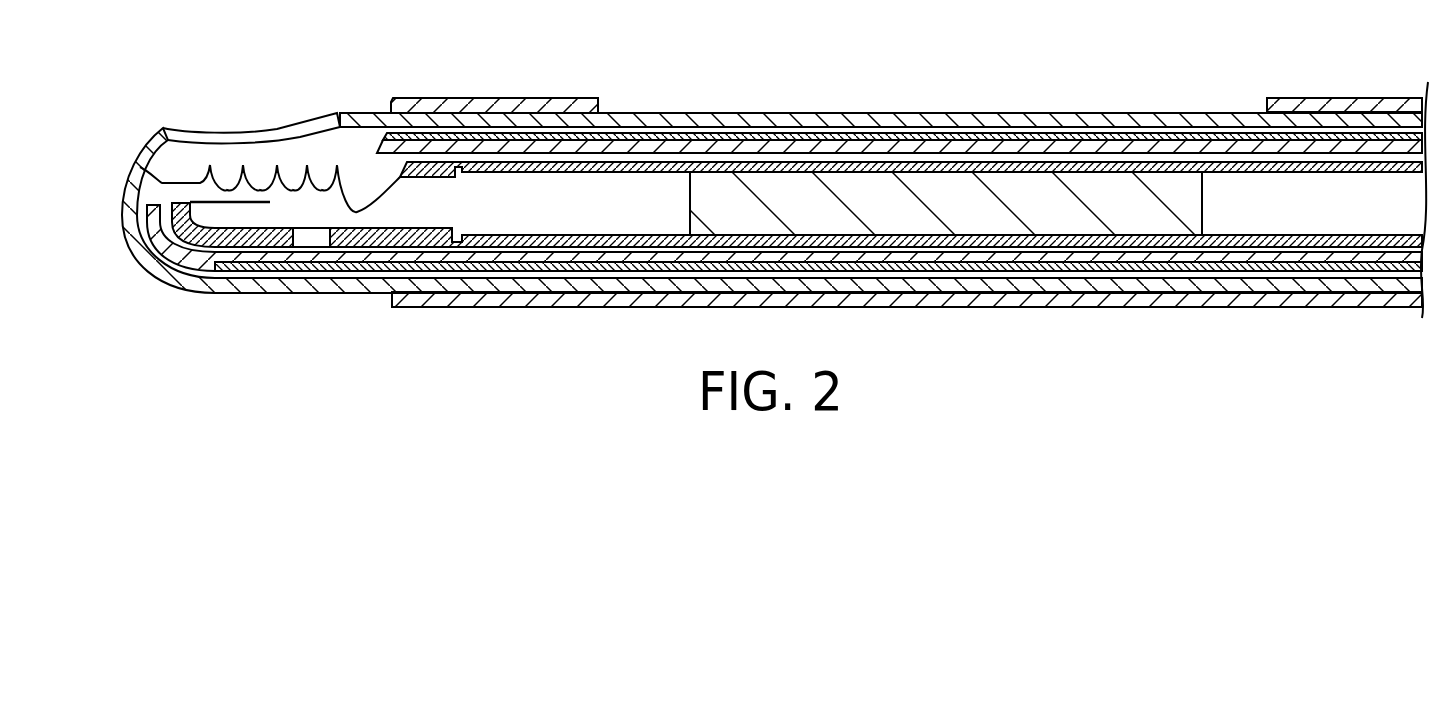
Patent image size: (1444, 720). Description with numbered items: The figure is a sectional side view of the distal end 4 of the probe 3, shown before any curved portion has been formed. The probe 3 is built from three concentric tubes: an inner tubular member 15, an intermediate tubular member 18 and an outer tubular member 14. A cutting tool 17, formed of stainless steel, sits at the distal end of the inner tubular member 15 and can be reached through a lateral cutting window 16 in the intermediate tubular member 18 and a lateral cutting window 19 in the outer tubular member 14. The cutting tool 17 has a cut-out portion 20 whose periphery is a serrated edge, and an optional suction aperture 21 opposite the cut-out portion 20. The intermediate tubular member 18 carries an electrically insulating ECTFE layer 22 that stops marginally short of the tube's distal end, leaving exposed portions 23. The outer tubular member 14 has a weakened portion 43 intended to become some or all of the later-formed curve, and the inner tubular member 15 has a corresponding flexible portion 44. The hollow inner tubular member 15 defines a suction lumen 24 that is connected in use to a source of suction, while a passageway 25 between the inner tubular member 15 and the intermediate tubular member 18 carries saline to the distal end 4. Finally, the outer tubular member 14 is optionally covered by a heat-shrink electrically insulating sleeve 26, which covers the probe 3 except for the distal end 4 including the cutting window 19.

The probe 3 is at (879, 58).
The distal end 4 is at (306, 60).
The outer tubular member 14 is at (695, 285).
The inner tubular member 15 is at (930, 240).
The lateral cutting window 16 is at (283, 165).
The cutting tool 17 is at (422, 252).
The intermediate tubular member 18 is at (1127, 253).
The lateral cutting window 19 is at (200, 133).
The cut-out portion 20 is at (275, 207).
The suction aperture 21 is at (312, 237).
The electrically insulating ECTFE layer 22 is at (652, 133).
The exposed portions 23 is at (152, 172).
The suction lumen 24 is at (1236, 190).
The passageway 25 is at (1113, 150).
The heat-shrink electrically insulating sleeve 26 is at (527, 98).
The weakened portion 43 is at (817, 112).
The flexible portion 44 is at (1022, 190).